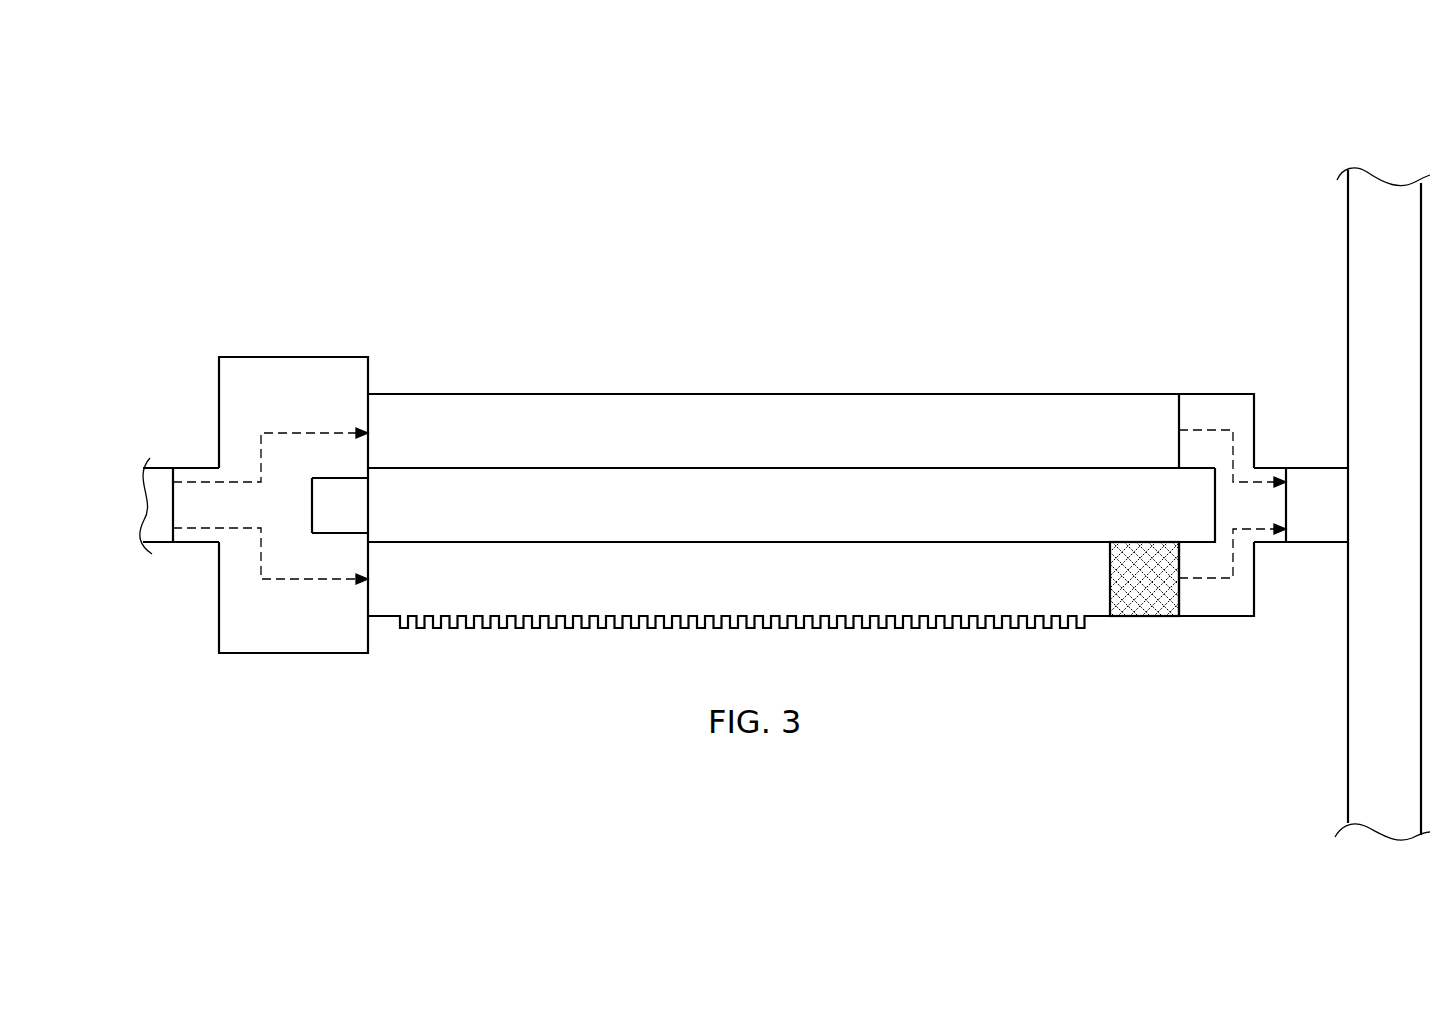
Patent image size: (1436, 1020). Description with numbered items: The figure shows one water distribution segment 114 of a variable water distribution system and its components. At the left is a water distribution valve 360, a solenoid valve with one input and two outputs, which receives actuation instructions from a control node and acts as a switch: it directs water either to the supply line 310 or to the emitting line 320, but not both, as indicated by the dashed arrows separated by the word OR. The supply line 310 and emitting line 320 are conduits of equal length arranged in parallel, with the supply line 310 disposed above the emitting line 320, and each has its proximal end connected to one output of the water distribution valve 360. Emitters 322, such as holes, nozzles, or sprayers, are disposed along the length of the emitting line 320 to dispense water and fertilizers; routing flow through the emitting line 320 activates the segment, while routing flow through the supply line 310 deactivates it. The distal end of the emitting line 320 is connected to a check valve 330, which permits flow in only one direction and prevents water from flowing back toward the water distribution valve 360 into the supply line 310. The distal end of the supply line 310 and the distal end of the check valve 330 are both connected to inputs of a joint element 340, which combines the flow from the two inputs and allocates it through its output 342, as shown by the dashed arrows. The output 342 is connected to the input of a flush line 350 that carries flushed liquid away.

The water distribution segment 114 is at (1333, 128).
The supply line 310 is at (898, 394).
The emitting line 320 is at (898, 542).
The emitters 322 is at (472, 628).
The check valve 330 is at (1122, 548).
The joint element 340 is at (1187, 394).
The output 342 is at (1260, 468).
The flush line 350 is at (1347, 720).
The water distribution valve 360 is at (337, 357).